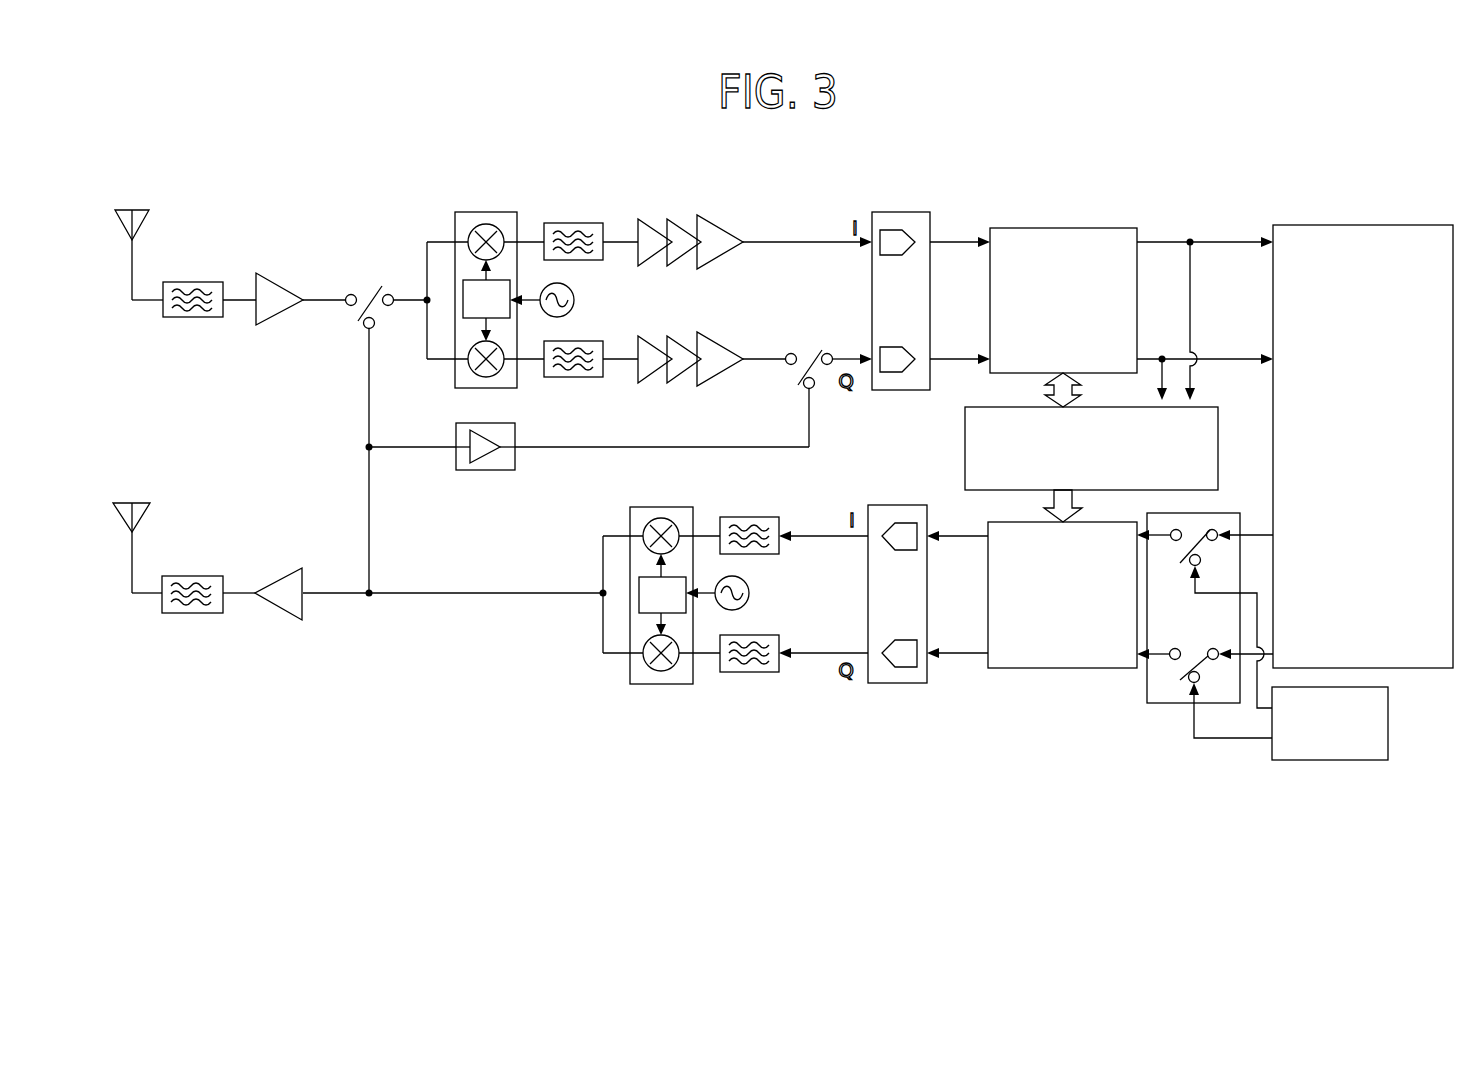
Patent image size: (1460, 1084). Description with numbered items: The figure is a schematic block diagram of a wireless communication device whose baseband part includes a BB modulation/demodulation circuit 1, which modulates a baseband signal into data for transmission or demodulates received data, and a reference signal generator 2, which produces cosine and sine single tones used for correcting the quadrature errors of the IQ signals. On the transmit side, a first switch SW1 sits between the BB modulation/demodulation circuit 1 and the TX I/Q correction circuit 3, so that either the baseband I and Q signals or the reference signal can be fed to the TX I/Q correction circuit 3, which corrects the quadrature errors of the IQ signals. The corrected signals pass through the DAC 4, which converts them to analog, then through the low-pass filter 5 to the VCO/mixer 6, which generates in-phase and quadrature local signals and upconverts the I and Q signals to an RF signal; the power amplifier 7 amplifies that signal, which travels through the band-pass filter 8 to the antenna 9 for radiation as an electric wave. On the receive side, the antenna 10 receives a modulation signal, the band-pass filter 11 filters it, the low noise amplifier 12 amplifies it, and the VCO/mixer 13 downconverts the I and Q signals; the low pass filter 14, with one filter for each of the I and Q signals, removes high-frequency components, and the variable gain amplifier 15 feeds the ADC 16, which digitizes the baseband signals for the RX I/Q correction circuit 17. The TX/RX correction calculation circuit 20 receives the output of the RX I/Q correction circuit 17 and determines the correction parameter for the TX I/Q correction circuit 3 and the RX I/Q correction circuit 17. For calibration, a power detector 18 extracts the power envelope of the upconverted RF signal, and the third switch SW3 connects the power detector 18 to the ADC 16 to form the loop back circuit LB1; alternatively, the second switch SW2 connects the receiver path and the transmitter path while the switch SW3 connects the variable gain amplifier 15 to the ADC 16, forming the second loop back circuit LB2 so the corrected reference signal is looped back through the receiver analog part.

The BB modulation/demodulation circuit 1 is at (1414, 225).
The reference signal generator 2 is at (1350, 760).
The TX I/Q correction circuit 3 is at (1090, 668).
The digital analog converter 4 is at (908, 505).
The low-pass filter 5 is at (766, 517).
The VCO/mixer 6 is at (675, 507).
The power amplifier 7 is at (279, 575).
The band-pass filter 8 is at (182, 576).
The antenna 9 is at (121, 503).
The antenna 10 is at (123, 210).
The band-pass filter 11 is at (182, 282).
The low noise amplifier 12 is at (278, 280).
The VCO/mixer 13 is at (498, 212).
The low pass filter 14 is at (586, 223).
The variable gain amplifier 15 is at (716, 218).
The analog digital converter 16 is at (914, 212).
The RX I/Q correction circuit 17 is at (1094, 228).
The power detector 18 is at (466, 470).
The TX/RX correction calculation circuit 20 is at (1211, 407).
The first switch SW1 is at (1235, 513).
The second switch SW2 is at (388, 277).
The third switch SW3 is at (816, 336).
The loop back circuit LB1 is at (589, 418).
The second loop back circuit LB2 is at (346, 461).